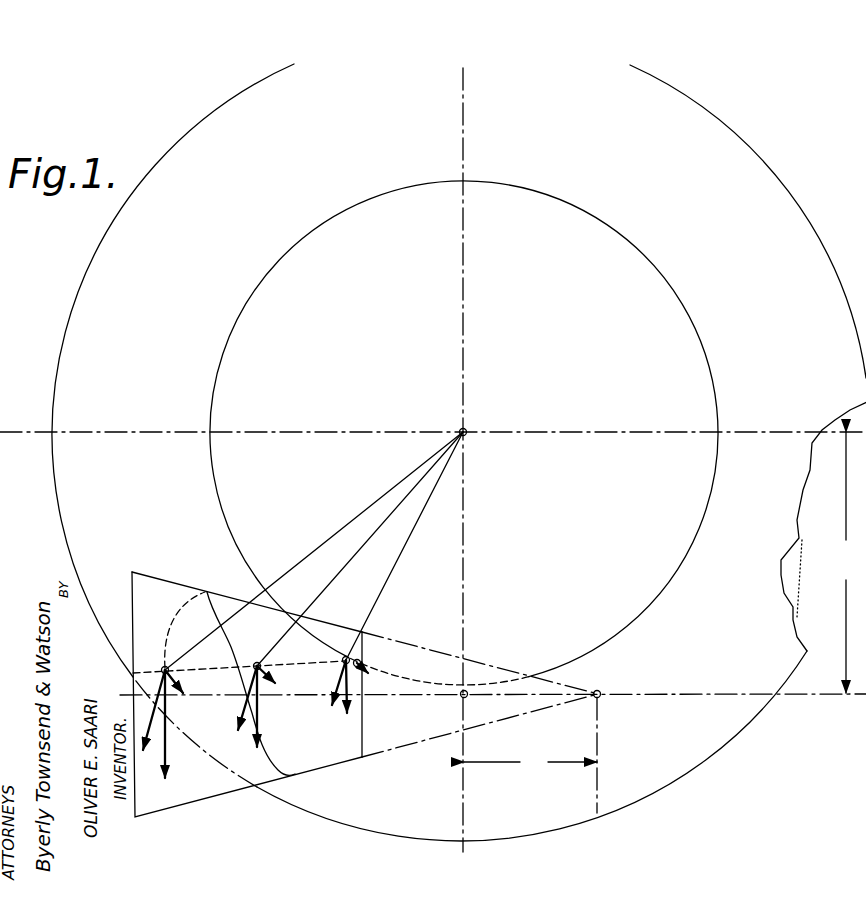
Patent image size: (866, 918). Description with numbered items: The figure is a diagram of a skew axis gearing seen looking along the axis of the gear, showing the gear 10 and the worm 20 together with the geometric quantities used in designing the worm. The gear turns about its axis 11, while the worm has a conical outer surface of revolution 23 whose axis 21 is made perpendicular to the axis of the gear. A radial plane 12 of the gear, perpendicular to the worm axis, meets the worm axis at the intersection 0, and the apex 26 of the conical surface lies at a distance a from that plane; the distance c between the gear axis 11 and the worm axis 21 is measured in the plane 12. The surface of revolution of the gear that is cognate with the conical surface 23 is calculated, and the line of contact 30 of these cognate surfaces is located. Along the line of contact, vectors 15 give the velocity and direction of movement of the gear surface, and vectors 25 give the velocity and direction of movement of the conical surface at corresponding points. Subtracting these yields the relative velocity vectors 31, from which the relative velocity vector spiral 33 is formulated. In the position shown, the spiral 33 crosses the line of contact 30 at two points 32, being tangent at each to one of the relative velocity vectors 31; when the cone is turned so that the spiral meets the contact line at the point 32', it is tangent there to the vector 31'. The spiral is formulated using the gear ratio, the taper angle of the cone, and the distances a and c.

The gear 10 is at (82, 285).
The axis of the gear 11 is at (466, 430).
The radial plane of the gear 12 is at (466, 512).
The vectors 15 is at (188, 673).
The worm 20 is at (159, 587).
The axis of the worm 21 is at (428, 699).
The conical surface of revolution 23 is at (233, 592).
The vectors 25 is at (168, 723).
The apex of the conical surface 26 is at (601, 692).
The line of contact 30 is at (324, 657).
The relative velocity vectors 31 is at (226, 705).
The relative velocity vector 31' is at (231, 698).
The points of intersection 32 is at (264, 619).
The point of intersection 32' is at (264, 648).
The relative velocity vector spiral 33 is at (182, 612).
The intersection of the radial plane with the worm axis 0 is at (461, 699).
The distance from the plane to the apex a is at (530, 764).
The distance between the gear axis and the worm axis c is at (843, 562).